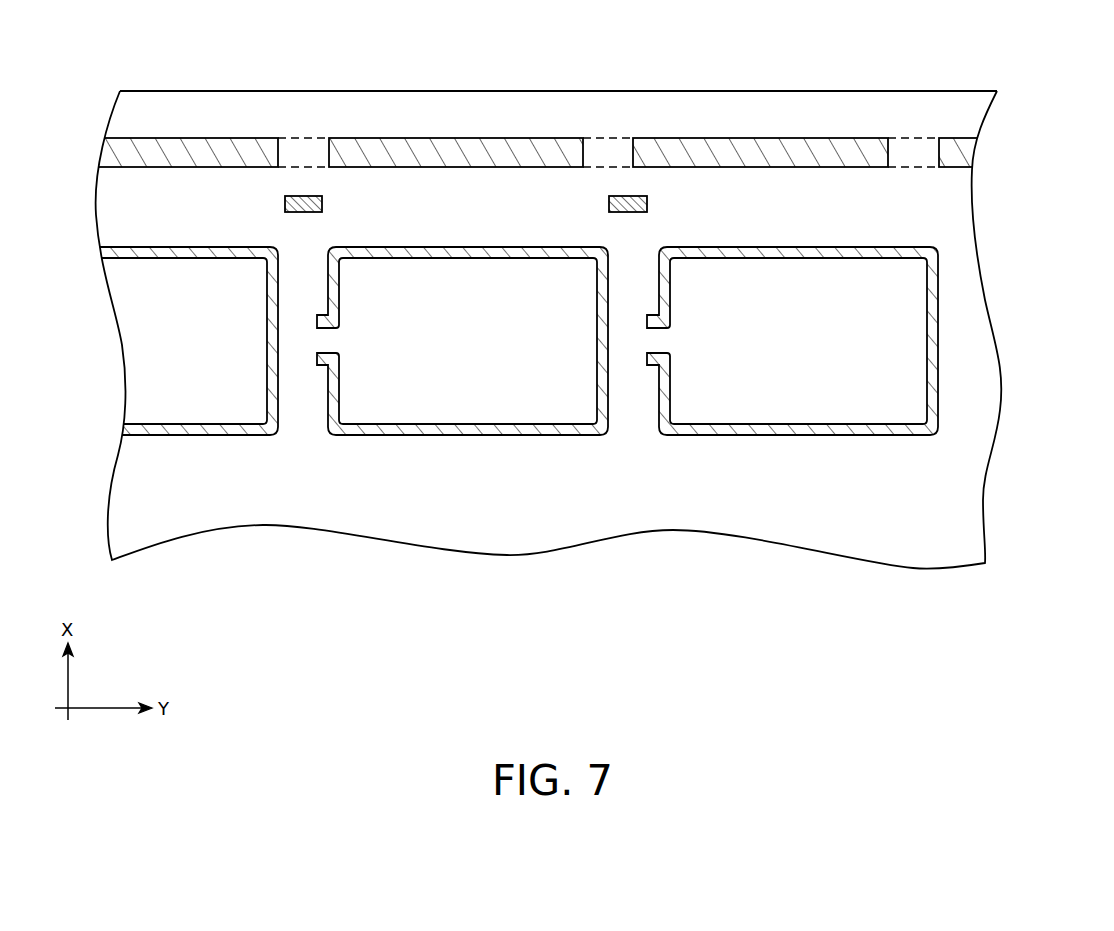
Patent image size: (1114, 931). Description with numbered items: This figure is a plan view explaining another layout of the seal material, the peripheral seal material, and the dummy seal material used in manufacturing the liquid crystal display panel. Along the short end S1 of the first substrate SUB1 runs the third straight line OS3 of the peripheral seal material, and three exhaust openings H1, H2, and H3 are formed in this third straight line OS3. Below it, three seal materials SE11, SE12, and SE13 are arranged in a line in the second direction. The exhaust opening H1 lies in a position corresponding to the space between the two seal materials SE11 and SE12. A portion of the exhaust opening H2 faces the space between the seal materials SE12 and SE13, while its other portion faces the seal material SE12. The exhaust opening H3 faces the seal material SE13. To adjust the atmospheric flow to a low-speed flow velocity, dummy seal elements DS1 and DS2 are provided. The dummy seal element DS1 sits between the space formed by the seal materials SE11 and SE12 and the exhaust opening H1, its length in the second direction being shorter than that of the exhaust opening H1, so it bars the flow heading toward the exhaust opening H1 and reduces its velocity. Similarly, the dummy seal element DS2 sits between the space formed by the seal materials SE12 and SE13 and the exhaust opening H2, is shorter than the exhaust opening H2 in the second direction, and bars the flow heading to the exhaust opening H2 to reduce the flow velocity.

The first substrate SUB1 is at (987, 497).
The short end S1 is at (978, 91).
The third straight line OS3 is at (967, 147).
The exhaust opening H1 is at (310, 137).
The exhaust opening H2 is at (610, 137).
The exhaust opening H3 is at (919, 137).
The dummy seal element DS1 is at (323, 203).
The dummy seal element DS2 is at (648, 203).
The seal material SE11 is at (178, 436).
The seal material SE12 is at (465, 436).
The seal material SE13 is at (808, 436).